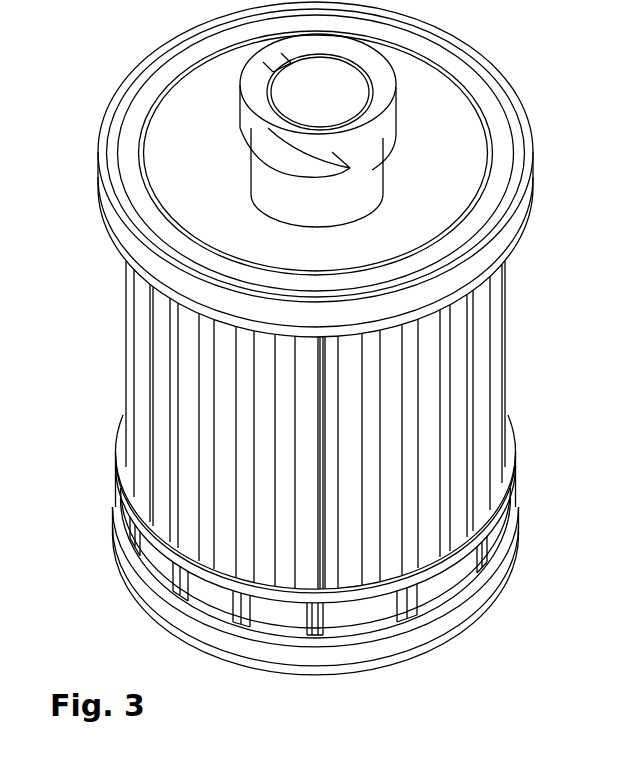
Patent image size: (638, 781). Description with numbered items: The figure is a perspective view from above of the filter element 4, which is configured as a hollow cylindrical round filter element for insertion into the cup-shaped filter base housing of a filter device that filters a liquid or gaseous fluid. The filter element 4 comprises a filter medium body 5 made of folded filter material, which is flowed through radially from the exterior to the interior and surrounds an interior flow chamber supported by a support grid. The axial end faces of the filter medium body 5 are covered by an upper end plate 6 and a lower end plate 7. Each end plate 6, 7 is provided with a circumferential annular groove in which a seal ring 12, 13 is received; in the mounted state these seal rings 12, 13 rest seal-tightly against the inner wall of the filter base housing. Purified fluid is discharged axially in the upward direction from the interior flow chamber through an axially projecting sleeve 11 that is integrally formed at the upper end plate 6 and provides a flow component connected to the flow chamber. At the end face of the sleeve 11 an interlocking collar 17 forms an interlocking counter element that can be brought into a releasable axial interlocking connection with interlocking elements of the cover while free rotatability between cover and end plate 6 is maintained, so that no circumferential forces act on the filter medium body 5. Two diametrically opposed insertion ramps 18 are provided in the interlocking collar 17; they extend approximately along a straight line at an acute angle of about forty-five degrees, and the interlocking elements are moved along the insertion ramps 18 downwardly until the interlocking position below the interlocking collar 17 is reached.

The filter element 4 is at (517, 61).
The filter medium body 5 is at (483, 372).
The upper end plate 6 is at (515, 133).
The end plate 7 is at (461, 624).
The sleeve 11 is at (376, 178).
The seal ring 12 is at (519, 221).
The seal ring 13 is at (494, 579).
The interlocking collar 17 is at (248, 127).
The insertion ramps 18 is at (292, 56).